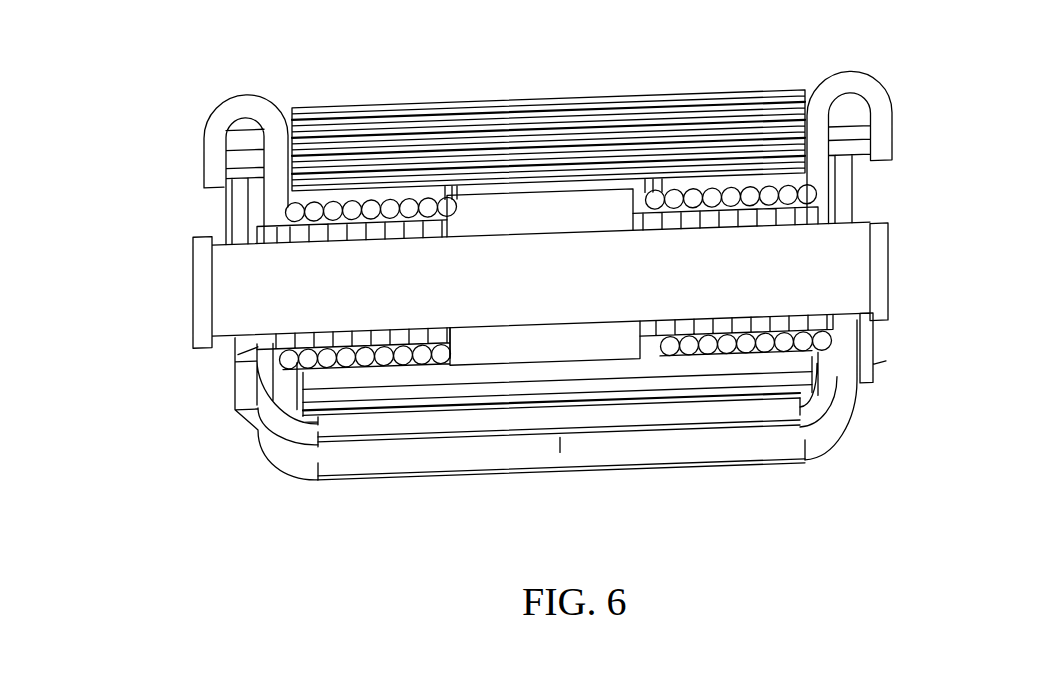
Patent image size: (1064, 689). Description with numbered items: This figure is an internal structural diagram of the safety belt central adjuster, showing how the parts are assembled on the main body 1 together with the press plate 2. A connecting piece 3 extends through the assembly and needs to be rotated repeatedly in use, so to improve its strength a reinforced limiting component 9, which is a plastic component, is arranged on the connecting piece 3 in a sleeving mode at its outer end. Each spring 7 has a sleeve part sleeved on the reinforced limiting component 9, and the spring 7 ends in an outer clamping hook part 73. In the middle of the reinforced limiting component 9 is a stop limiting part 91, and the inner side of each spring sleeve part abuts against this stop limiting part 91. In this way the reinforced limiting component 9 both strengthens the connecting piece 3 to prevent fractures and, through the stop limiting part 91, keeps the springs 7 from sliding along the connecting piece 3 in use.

The main body 1 is at (323, 435).
The press plate 2 is at (367, 107).
The connecting piece 3 is at (598, 297).
The spring 7 is at (322, 222).
The reinforced limiting component 9 is at (817, 212).
The outer clamping hook part 73 is at (228, 108).
The stop limiting part 91 is at (521, 207).